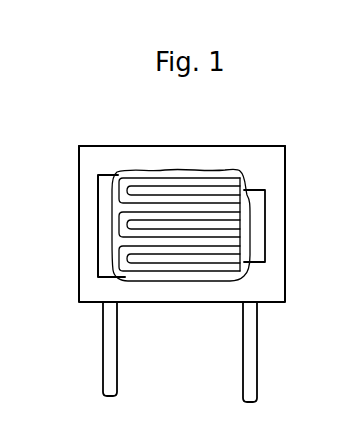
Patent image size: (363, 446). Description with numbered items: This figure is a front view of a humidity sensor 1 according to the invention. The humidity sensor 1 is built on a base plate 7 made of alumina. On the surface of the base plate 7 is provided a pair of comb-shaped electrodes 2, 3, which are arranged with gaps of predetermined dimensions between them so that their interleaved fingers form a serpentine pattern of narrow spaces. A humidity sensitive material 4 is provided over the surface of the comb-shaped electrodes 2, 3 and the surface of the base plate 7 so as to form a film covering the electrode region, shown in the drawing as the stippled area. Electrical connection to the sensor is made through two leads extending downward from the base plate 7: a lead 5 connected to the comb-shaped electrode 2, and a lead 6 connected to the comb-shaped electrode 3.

The humidity sensor 1 is at (223, 143).
The comb-shaped electrode 2 is at (98, 233).
The comb-shaped electrode 3 is at (258, 202).
The humidity sensitive material 4 is at (142, 282).
The lead 5 is at (104, 364).
The lead 6 is at (245, 372).
The base plate 7 is at (130, 148).